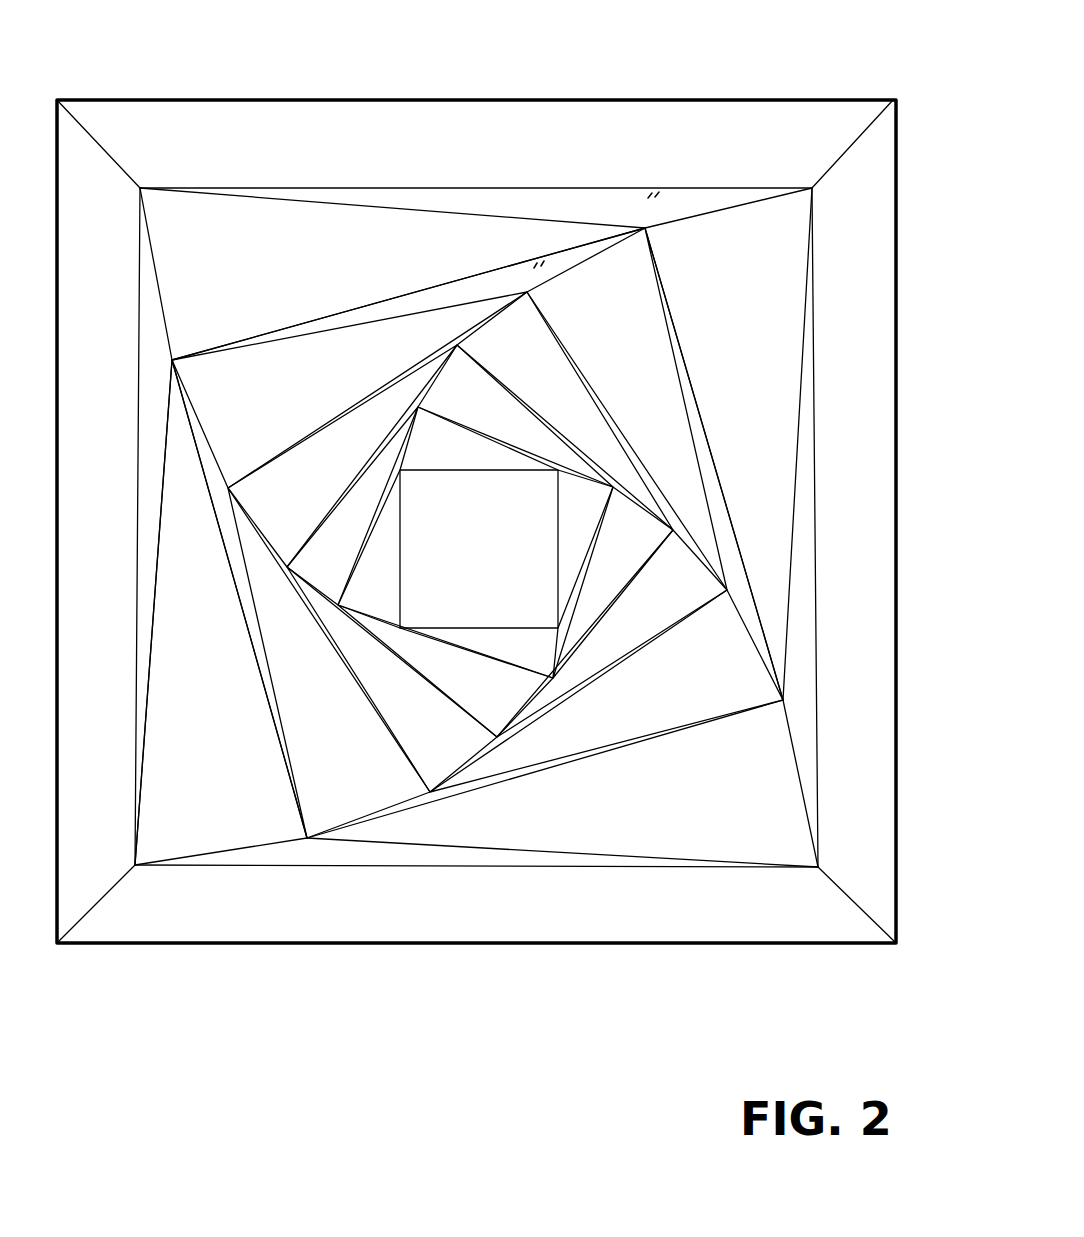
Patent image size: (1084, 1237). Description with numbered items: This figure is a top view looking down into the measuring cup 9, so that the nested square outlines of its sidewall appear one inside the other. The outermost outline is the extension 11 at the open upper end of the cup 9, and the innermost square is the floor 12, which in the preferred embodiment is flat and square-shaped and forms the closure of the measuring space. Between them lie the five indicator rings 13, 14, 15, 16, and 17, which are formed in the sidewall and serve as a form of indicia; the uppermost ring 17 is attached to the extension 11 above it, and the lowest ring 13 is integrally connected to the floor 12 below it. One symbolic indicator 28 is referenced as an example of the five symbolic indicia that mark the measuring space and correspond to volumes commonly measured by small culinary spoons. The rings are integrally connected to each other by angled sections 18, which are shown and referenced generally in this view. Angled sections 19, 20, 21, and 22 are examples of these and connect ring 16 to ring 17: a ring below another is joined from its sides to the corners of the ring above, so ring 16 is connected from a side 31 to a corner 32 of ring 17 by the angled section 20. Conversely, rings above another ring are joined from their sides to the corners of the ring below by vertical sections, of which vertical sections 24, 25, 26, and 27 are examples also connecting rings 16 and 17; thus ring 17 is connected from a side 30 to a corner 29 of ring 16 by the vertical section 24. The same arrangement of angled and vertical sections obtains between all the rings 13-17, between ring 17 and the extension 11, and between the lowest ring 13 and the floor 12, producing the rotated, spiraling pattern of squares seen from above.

The cup 9 is at (478, 75).
The extension 11 is at (860, 428).
The floor 12 is at (478, 546).
The indicator ring 13 is at (440, 412).
The indicator ring 14 is at (478, 365).
The indicator ring 15 is at (550, 320).
The indicator ring 16 is at (668, 276).
The indicator ring 17 is at (822, 358).
The angled sections 18 is at (190, 781).
The angled section 19 is at (196, 585).
The angled section 20 is at (422, 250).
The angled section 21 is at (755, 485).
The angled section 22 is at (670, 800).
The vertical section 24 is at (155, 368).
The vertical section 25 is at (572, 205).
The vertical section 26 is at (805, 665).
The vertical section 27 is at (308, 850).
The symbolic indicator 28 is at (668, 195).
The corner 29 is at (172, 355).
The side 30 is at (135, 308).
The side 31 is at (306, 322).
The corner 32 is at (148, 196).